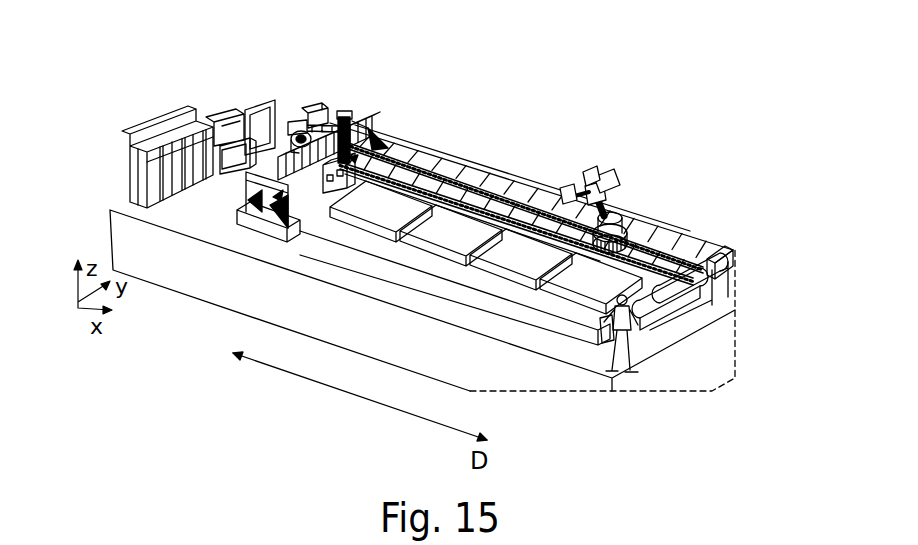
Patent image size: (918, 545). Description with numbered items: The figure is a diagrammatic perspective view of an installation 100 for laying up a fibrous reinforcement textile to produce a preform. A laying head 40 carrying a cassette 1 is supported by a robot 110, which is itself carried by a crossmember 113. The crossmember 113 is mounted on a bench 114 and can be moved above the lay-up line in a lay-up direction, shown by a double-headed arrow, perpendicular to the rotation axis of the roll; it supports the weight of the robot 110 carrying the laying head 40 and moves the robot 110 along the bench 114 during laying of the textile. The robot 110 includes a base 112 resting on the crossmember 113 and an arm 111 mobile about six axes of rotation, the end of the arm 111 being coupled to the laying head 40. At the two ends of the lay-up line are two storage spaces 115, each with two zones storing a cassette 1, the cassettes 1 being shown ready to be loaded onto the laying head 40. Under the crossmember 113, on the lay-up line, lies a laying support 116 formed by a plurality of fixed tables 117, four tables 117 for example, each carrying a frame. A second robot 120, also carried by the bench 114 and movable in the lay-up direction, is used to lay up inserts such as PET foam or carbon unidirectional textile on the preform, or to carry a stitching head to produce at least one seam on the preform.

The cassette 1 is at (255, 115).
The laying head 40 is at (395, 127).
The installation 100 is at (480, 143).
The robot 110 is at (340, 118).
The arm 111 is at (320, 105).
The base 112 is at (300, 108).
The crossmember 113 is at (242, 197).
The bench 114 is at (262, 218).
The storage space 115 is at (238, 120).
The laying support 116 is at (423, 242).
The table 117 is at (507, 270).
The second robot 120 is at (618, 172).